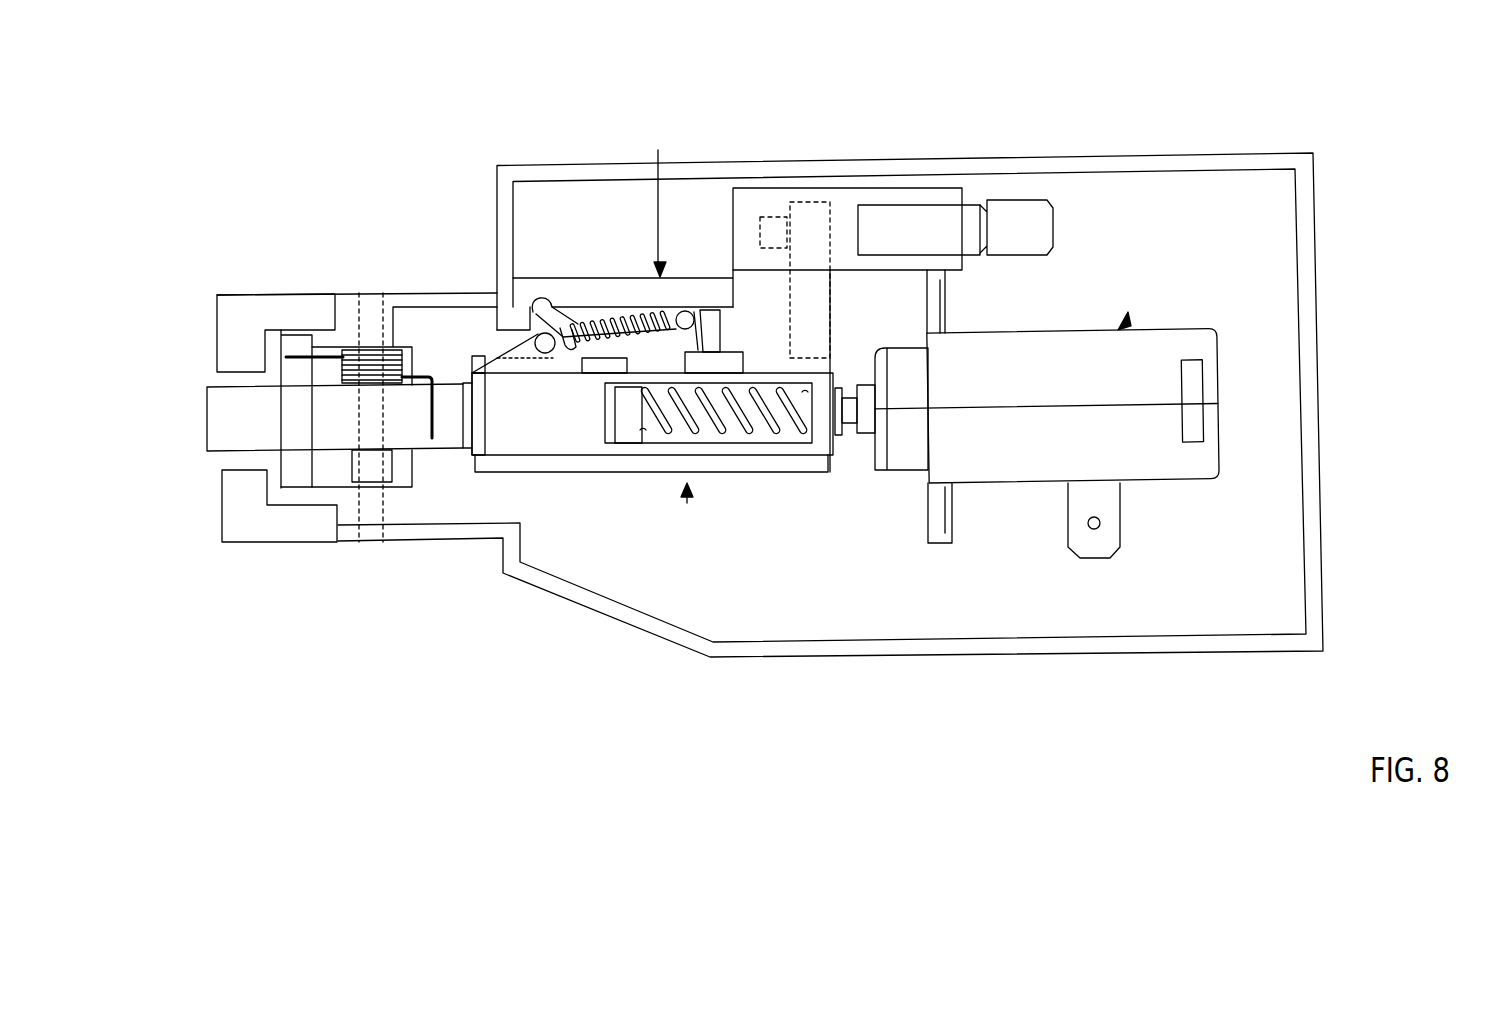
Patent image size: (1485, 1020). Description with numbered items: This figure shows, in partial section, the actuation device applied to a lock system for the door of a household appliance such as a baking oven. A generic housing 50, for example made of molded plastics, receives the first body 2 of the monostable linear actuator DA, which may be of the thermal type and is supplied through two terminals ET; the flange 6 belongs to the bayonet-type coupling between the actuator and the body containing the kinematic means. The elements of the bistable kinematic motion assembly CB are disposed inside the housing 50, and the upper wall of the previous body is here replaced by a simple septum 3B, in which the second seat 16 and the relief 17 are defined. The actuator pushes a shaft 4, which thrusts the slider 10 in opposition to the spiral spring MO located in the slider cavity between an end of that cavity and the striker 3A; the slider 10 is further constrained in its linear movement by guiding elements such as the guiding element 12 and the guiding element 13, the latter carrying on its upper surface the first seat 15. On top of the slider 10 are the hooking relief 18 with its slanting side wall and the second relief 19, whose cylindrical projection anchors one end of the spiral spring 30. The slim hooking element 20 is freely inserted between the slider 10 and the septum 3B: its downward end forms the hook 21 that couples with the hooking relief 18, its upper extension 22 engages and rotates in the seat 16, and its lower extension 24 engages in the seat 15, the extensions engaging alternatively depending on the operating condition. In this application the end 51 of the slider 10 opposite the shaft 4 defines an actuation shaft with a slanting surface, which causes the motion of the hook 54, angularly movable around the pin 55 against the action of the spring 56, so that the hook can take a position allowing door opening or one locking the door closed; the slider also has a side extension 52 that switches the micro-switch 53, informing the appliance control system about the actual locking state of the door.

The first body 2 is at (1171, 467).
The striker 3A is at (625, 462).
The septum 3B is at (658, 262).
The shaft 4 is at (870, 422).
The flange 6 is at (938, 533).
The slider 10 is at (557, 433).
The guiding element 12 is at (768, 362).
The guiding element 13 is at (497, 355).
The first seat 15 is at (580, 352).
The second seat 16 is at (548, 333).
The relief 17 is at (513, 327).
The hooking relief 18 is at (713, 360).
The second relief 19 is at (538, 350).
The hooking element 20 is at (585, 314).
The hook 21 is at (702, 312).
The upper extension 22 is at (548, 300).
The lower extension 24 is at (536, 348).
The spiral spring 30 is at (630, 310).
The housing 50 is at (1326, 592).
The end of the slider 51 is at (469, 455).
The side extension 52 is at (820, 315).
The micro-switch 53 is at (751, 200).
The hook 54 is at (223, 443).
The pin 55 is at (376, 540).
The spring 56 is at (432, 350).
The bistable kinematic motion assembly CB is at (687, 503).
The linear actuator DA is at (1125, 322).
The terminals ET is at (1085, 540).
The spiral spring MO is at (768, 418).